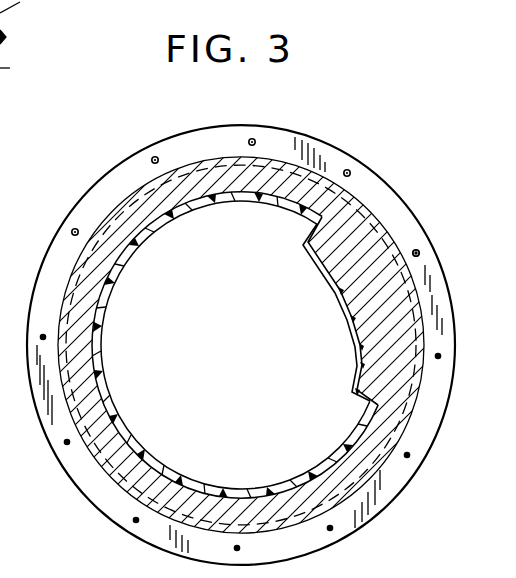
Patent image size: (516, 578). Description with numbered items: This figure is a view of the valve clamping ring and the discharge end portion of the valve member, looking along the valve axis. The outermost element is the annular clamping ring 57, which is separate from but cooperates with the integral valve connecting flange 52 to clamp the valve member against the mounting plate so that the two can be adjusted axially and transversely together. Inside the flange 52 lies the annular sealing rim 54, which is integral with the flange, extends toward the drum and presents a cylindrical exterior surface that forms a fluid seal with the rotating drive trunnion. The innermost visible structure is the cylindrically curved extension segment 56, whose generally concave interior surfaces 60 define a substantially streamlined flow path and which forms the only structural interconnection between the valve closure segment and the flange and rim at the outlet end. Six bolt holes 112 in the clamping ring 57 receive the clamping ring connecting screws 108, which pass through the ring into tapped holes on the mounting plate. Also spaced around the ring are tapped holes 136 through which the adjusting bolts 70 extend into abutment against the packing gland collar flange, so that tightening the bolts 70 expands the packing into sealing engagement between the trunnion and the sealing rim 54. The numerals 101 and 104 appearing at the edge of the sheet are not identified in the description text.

The valve connecting flange 52 is at (108, 212).
The sealing rim 54 is at (160, 213).
The extension segment 56 is at (318, 256).
The clamping ring 57 is at (310, 133).
The interior surfaces 60 is at (323, 264).
The adjusting bolts 70 is at (156, 158).
The clamping ring connecting screws 108 is at (253, 141).
The bolt holes 112 is at (251, 141).
The tapped holes 136 is at (152, 160).
The adjacent figure element 101 is at (21, 22).
The adjacent figure element 104 is at (21, 68).